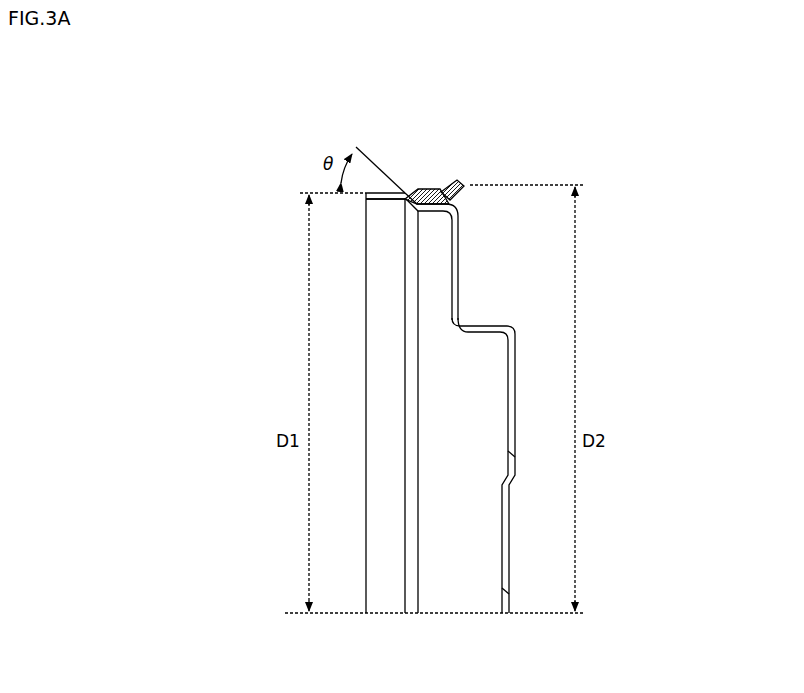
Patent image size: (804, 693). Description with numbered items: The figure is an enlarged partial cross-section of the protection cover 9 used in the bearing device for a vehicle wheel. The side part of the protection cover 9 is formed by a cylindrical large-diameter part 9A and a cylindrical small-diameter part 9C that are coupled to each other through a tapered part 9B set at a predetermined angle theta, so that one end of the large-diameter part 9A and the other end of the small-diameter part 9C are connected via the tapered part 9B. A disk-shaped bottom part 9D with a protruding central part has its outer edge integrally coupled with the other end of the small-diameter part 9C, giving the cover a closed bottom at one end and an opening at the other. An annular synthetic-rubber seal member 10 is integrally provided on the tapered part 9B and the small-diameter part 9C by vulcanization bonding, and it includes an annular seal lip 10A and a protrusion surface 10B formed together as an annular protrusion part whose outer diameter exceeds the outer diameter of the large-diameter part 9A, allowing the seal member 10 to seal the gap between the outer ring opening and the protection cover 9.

The protection cover 9 is at (306, 166).
The large-diameter part 9A is at (383, 191).
The tapered part 9B is at (403, 213).
The small-diameter part 9C is at (436, 206).
The bottom part 9D is at (461, 296).
The seal member 10 is at (441, 136).
The annular seal lip 10A is at (450, 190).
The protrusion surface 10B is at (420, 190).